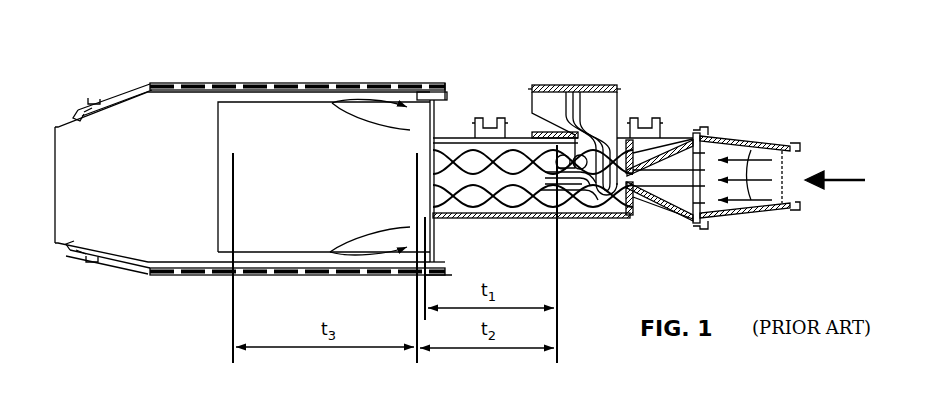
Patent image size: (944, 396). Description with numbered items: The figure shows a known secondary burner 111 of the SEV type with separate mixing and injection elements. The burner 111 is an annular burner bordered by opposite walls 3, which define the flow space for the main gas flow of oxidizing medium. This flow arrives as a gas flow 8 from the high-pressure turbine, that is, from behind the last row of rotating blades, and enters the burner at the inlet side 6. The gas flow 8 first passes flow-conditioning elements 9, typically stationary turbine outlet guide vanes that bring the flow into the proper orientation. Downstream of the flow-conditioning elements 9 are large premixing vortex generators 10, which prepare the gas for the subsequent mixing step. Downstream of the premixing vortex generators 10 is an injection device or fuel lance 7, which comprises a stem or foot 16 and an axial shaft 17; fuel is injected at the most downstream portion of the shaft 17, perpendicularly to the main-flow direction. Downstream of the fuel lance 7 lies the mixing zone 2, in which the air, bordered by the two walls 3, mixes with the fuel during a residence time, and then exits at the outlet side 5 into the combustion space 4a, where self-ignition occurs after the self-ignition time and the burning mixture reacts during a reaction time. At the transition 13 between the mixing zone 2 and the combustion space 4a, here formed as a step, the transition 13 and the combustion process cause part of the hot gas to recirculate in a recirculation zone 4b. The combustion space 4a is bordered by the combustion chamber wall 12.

The secondary burner 111 is at (100, 85).
The combustion chamber wall 12 is at (316, 86).
The combustion space 4a is at (298, 172).
The recirculation zone 4b is at (420, 96).
The transition 13 is at (437, 113).
The outlet side 5 is at (413, 178).
The mixing zone 2 is at (458, 186).
The opposite walls 3 is at (573, 221).
The stem or foot 16 is at (581, 94).
The injection device or fuel lance 7 is at (567, 161).
The axial shaft 17 is at (600, 194).
The premixing vortex generators 10 is at (663, 218).
The inlet side 6 is at (797, 168).
The flow-conditioning elements 9 is at (758, 198).
The gas flow 8 is at (834, 184).